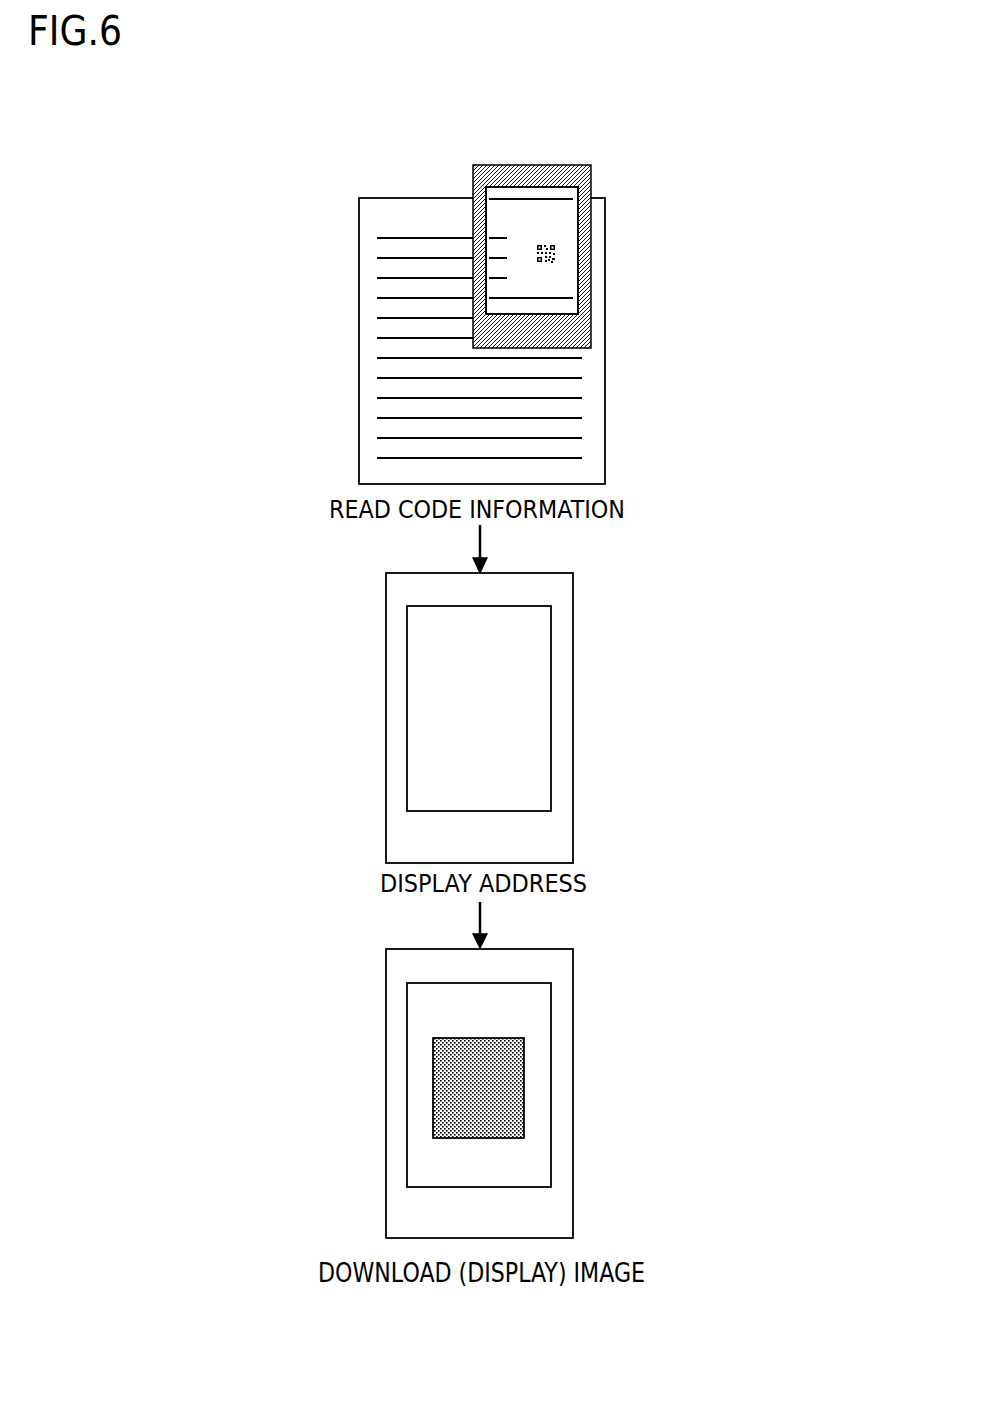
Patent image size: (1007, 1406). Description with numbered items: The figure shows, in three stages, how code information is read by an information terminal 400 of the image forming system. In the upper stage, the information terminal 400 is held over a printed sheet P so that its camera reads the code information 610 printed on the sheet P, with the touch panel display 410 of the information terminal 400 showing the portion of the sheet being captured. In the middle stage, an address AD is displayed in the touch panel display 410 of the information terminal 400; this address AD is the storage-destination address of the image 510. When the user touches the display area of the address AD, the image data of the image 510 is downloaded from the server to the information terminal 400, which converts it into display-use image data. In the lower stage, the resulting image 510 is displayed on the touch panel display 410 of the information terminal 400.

The information terminal 400 is at (503, 165).
The touch panel display 410 is at (507, 223).
The code information 610 is at (560, 256).
The image 510 is at (524, 1090).
The printed material P is at (614, 204).
The address AD is at (438, 706).